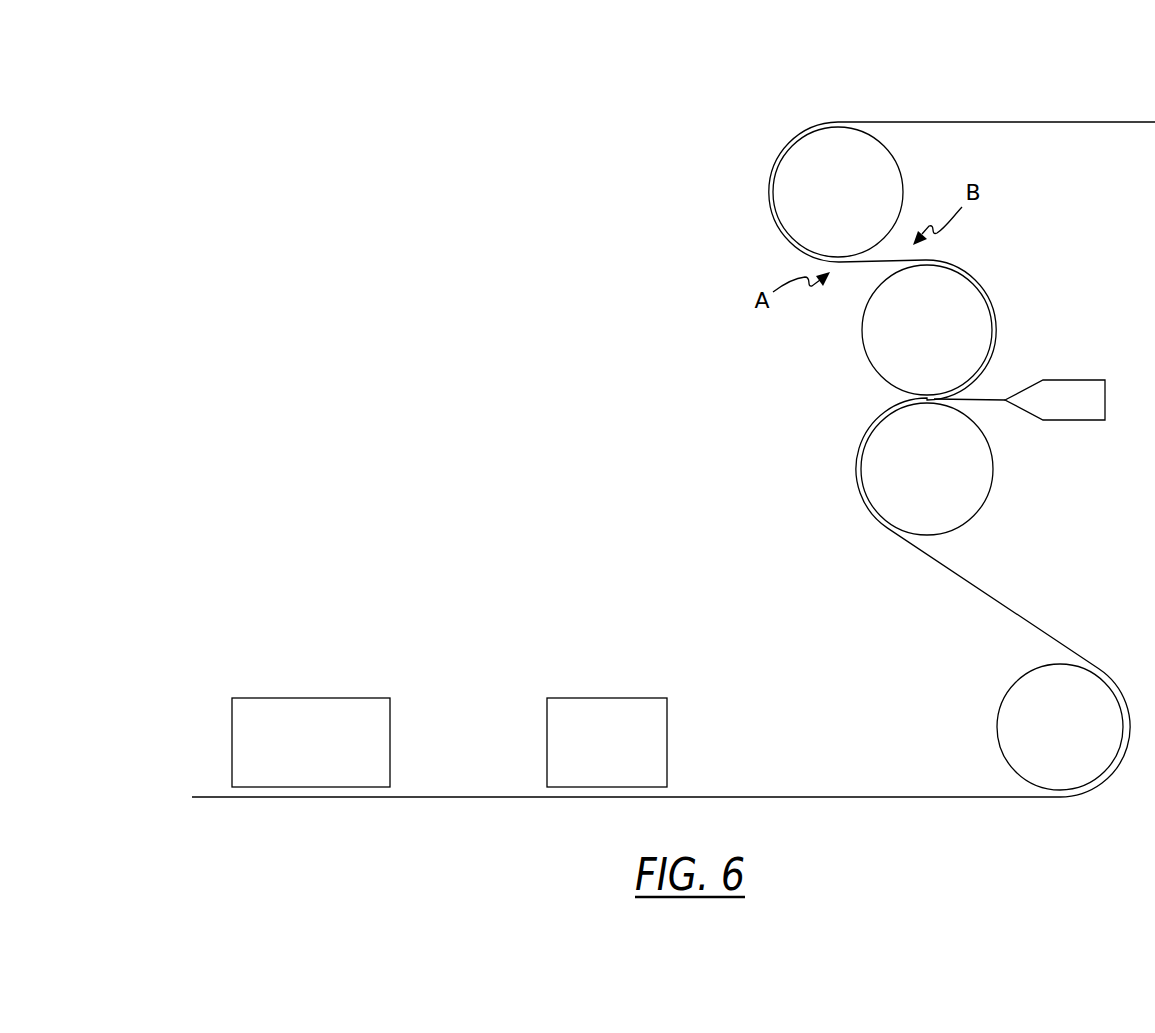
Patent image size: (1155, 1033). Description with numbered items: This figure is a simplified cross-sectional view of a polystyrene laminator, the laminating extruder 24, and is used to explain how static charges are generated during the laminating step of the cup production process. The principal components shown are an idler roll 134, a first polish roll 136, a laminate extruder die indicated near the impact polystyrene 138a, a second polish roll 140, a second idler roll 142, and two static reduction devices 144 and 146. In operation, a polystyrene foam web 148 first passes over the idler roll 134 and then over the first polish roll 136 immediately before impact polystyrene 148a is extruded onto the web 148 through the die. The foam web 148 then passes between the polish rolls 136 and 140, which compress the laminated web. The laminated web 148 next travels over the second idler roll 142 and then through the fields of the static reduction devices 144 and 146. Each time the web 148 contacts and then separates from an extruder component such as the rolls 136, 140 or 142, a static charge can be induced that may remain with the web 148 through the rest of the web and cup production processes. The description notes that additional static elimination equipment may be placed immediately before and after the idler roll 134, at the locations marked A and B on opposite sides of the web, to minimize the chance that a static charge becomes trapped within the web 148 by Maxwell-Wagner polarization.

The laminating extruder 24 is at (566, 285).
The idler roll 134 is at (819, 204).
The first polish roll 136 is at (908, 344).
The web section 138a is at (1049, 411).
The second polish roll 140 is at (908, 482).
The second idler roll 142 is at (1041, 738).
The static reduction device 144 is at (588, 749).
The static reduction device 146 is at (288, 749).
The polystyrene foam web 148 is at (972, 121).
The impact polystyrene 148a is at (985, 400).